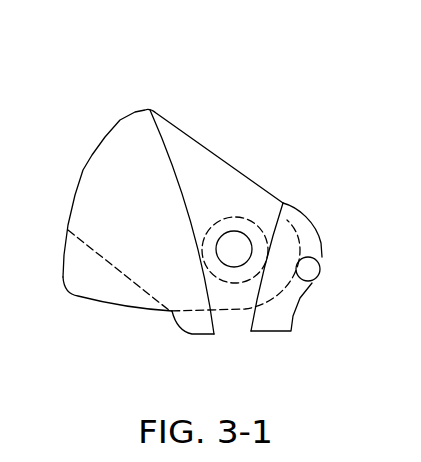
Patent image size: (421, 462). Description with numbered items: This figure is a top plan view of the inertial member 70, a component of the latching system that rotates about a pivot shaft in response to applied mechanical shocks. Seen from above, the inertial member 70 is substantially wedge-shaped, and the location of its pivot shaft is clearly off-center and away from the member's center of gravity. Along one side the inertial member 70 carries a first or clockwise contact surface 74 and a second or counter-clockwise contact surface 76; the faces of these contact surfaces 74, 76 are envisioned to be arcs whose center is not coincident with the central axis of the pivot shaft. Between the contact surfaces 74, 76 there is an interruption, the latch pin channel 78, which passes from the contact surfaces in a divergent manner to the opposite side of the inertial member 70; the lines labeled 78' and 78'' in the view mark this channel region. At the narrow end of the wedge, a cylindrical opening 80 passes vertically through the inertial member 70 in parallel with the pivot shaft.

The inertial member 70 is at (104, 141).
The clockwise (CW) contact surface 74 is at (278, 333).
The counter-clockwise (CCW) contact surface 76 is at (192, 334).
The latch pin channel 78 is at (252, 170).
The first fold line 78' is at (183, 168).
The second fold line 78'' is at (278, 225).
The cylindrical opening 80 is at (306, 268).